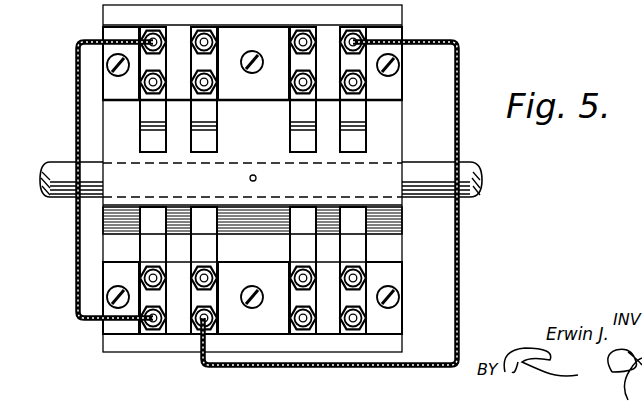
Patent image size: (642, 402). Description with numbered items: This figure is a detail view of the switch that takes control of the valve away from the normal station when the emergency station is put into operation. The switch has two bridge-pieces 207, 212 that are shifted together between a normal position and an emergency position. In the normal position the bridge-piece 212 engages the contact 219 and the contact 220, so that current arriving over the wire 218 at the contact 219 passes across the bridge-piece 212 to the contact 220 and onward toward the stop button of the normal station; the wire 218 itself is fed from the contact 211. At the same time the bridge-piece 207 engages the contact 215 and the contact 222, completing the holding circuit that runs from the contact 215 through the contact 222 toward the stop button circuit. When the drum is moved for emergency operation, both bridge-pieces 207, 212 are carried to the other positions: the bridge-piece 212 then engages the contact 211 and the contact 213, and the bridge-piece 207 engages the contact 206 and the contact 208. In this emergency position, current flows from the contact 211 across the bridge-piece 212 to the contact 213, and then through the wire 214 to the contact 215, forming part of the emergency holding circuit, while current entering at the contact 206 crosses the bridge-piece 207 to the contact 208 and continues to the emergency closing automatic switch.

The contact 206 is at (298, 243).
The bridge-piece 207 is at (332, 150).
The contact 208 is at (350, 247).
The contact 211 is at (147, 247).
The bridge-piece 212 is at (179, 148).
The contact 213 is at (207, 248).
The wire 214 is at (435, 40).
The contact 215 is at (355, 33).
The wire 218 is at (75, 83).
The contact 219 is at (152, 34).
The contact 220 is at (220, 38).
The contact 222 is at (296, 40).